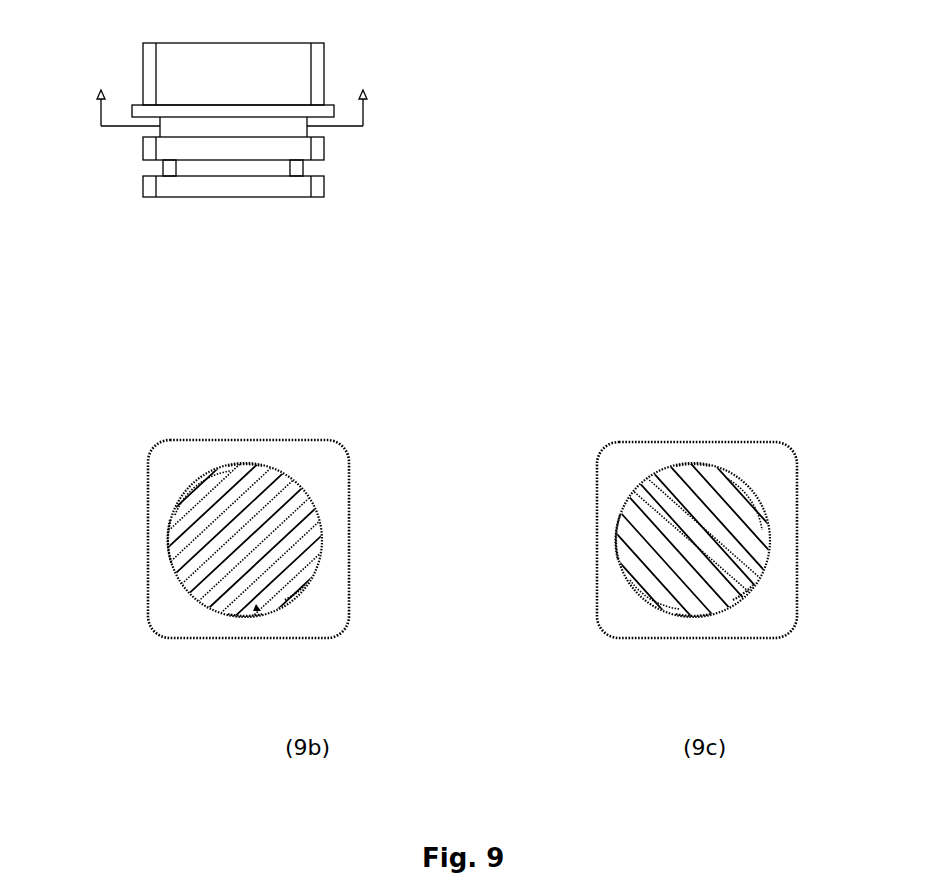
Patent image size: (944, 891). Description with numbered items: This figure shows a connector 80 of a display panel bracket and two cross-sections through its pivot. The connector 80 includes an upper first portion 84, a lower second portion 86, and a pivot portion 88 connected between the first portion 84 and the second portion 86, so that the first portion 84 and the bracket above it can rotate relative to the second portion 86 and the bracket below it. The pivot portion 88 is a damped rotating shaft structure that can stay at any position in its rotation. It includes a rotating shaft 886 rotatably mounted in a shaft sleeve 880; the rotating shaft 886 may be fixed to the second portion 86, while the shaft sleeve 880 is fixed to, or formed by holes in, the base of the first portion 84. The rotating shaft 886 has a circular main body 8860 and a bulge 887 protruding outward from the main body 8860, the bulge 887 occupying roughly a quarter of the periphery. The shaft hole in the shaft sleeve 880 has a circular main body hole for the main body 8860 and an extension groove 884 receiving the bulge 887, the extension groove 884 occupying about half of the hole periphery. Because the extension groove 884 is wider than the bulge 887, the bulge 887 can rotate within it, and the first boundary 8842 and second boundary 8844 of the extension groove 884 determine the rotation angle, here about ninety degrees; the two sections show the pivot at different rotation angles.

The connector 80 is at (115, 28).
The first portion 84 is at (142, 66).
The pivot portion 88 is at (161, 128).
The second portion 86 is at (142, 186).
The shaft sleeve 880 is at (323, 498).
The extension groove 884 is at (188, 493).
The first boundary 8842 is at (247, 468).
The second boundary 8844 is at (247, 617).
The rotating shaft 886 is at (278, 560).
The main body 8860 is at (278, 588).
The bulge 887 is at (178, 560).